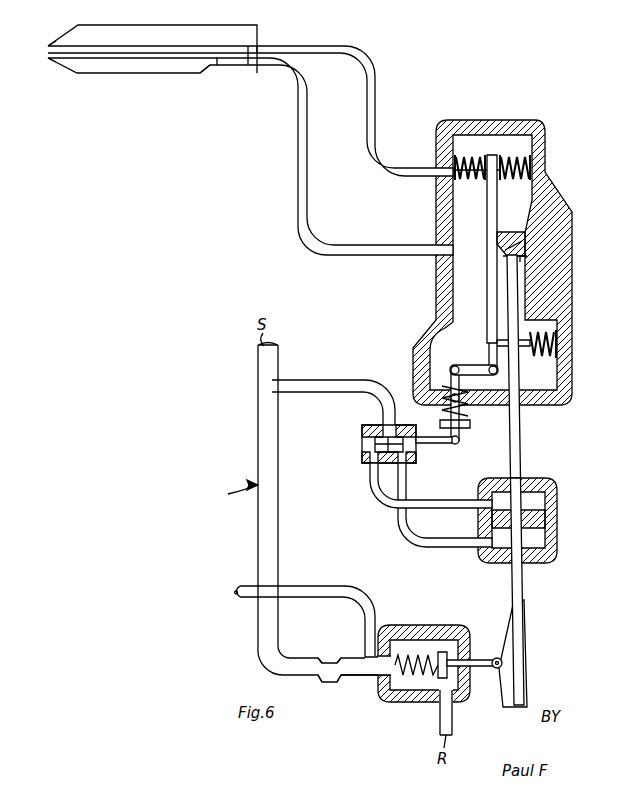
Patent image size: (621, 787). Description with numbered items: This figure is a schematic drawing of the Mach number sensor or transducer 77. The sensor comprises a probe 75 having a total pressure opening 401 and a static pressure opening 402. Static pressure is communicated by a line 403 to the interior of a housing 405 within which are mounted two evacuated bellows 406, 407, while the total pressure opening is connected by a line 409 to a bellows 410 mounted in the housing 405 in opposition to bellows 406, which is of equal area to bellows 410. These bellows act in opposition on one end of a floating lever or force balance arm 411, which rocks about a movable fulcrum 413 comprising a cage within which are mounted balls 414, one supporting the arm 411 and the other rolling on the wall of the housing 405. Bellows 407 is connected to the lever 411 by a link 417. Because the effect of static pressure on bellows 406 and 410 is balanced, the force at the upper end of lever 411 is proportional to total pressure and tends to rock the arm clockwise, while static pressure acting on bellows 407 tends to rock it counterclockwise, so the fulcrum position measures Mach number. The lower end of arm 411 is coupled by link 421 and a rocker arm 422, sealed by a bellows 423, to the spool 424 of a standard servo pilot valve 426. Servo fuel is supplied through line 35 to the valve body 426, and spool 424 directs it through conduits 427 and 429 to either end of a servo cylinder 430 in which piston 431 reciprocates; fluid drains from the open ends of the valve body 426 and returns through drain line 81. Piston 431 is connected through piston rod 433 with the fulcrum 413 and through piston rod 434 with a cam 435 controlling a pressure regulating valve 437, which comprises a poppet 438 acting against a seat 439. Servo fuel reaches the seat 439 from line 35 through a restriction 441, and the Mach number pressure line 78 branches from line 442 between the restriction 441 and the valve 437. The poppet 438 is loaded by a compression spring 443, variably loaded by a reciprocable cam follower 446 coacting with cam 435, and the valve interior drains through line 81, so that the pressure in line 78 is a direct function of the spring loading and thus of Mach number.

The probe 75 is at (163, 34).
The total pressure opening 401 is at (49, 47).
The static pressure opening 402 is at (211, 69).
The line 403 is at (352, 257).
The line 409 is at (376, 116).
The housing 405 is at (567, 232).
The bellows 410 is at (462, 156).
The evacuated bellows 406 is at (531, 168).
The floating lever or force balance arm 411 is at (490, 212).
The movable fulcrum 413 is at (504, 240).
The balls 414 is at (505, 253).
The link 417 is at (496, 343).
The evacuated bellows 407 is at (558, 343).
The link 421 is at (454, 367).
The rocker arm 422 is at (463, 431).
The bellows 423 is at (446, 444).
The spool 424 is at (362, 442).
The servo pilot valve 426 is at (373, 424).
The line 35 is at (258, 442).
The Mach number sensor or transducer 77 is at (228, 491).
The Mach number pressure line 78 is at (233, 592).
The conduit 427 is at (428, 506).
The conduit 429 is at (424, 541).
The servo cylinder 430 is at (557, 493).
The piston 431 is at (546, 519).
The piston rod 433 is at (521, 450).
The piston rod 434 is at (521, 604).
The cam 435 is at (499, 658).
The pressure regulating valve 437 is at (430, 641).
The poppet 438 is at (400, 655).
The seat 439 is at (384, 668).
The restriction 441 is at (322, 660).
The line 442 is at (346, 660).
The compression spring 443 is at (407, 676).
The cam follower 446 is at (477, 667).
The drain line 81 is at (441, 729).